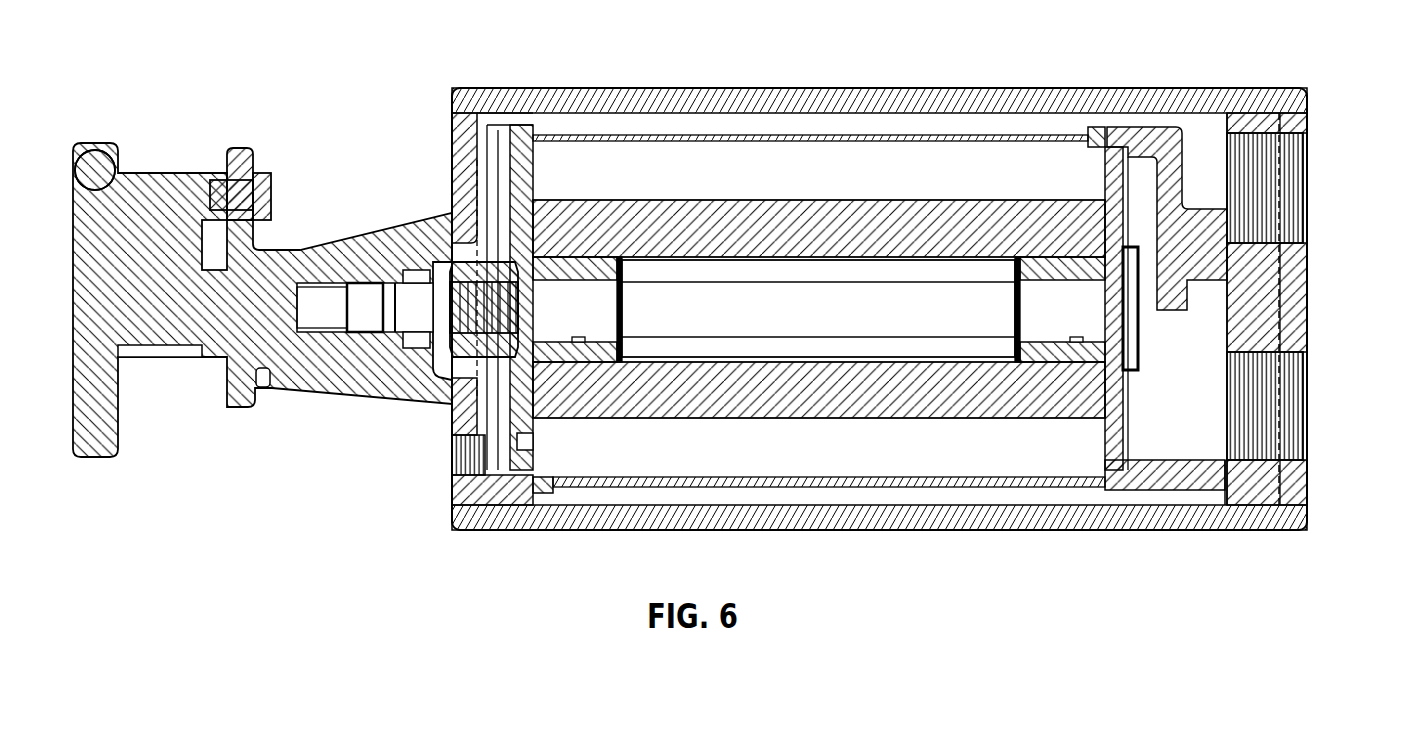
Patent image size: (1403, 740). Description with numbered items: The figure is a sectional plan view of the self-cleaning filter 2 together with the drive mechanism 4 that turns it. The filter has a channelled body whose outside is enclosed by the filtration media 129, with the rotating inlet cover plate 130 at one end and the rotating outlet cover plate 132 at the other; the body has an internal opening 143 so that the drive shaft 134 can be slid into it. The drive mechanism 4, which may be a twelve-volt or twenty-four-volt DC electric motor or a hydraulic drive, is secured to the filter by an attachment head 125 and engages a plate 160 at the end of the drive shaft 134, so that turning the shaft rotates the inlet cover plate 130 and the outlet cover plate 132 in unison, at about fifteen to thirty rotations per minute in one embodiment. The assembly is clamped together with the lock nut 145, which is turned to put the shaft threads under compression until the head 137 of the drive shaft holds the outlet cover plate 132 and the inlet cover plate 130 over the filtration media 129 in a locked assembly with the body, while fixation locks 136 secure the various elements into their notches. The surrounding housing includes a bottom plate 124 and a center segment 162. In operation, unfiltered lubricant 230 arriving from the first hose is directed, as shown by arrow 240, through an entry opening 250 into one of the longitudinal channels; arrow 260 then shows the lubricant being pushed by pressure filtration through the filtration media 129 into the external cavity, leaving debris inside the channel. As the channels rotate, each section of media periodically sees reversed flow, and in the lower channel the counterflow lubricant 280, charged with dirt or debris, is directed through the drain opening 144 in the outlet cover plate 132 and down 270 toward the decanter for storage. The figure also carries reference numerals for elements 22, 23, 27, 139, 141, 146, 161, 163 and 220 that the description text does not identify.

The self-cleaning filter 2 is at (820, 88).
The drive mechanism 4 is at (158, 172).
The first coil 22 is at (1310, 152).
The second coil 23 is at (1310, 385).
The seal 27 is at (463, 458).
The bottom plate 124 is at (462, 87).
The attachment head 125 is at (235, 148).
The filtration media 129 is at (893, 135).
The inlet cover plate 130 is at (1108, 128).
The outlet cover plate 132 is at (530, 124).
The drive shaft 134 is at (819, 309).
The fixation locks 136 is at (575, 338).
The head of the drive shaft 137 is at (1132, 353).
The spacer 139 is at (420, 293).
The shaft 141 is at (1070, 282).
The internal opening 143 is at (768, 262).
The drain opening 144 is at (523, 442).
The lock nut 145 is at (467, 270).
The washer 146 is at (578, 280).
The plate 160 is at (342, 315).
The seal groove 161 is at (262, 385).
The center segment 162 is at (1280, 92).
The liner 163 is at (1088, 487).
The direction of force 220 is at (1313, 187).
The unfiltered lubricant 230 is at (1318, 405).
The arrow 240 is at (1172, 400).
The entry opening 250 is at (1137, 177).
The arrow 260 is at (1000, 123).
The down direction 270 is at (410, 455).
The lubricant charged with dirt or debris 280 is at (642, 447).